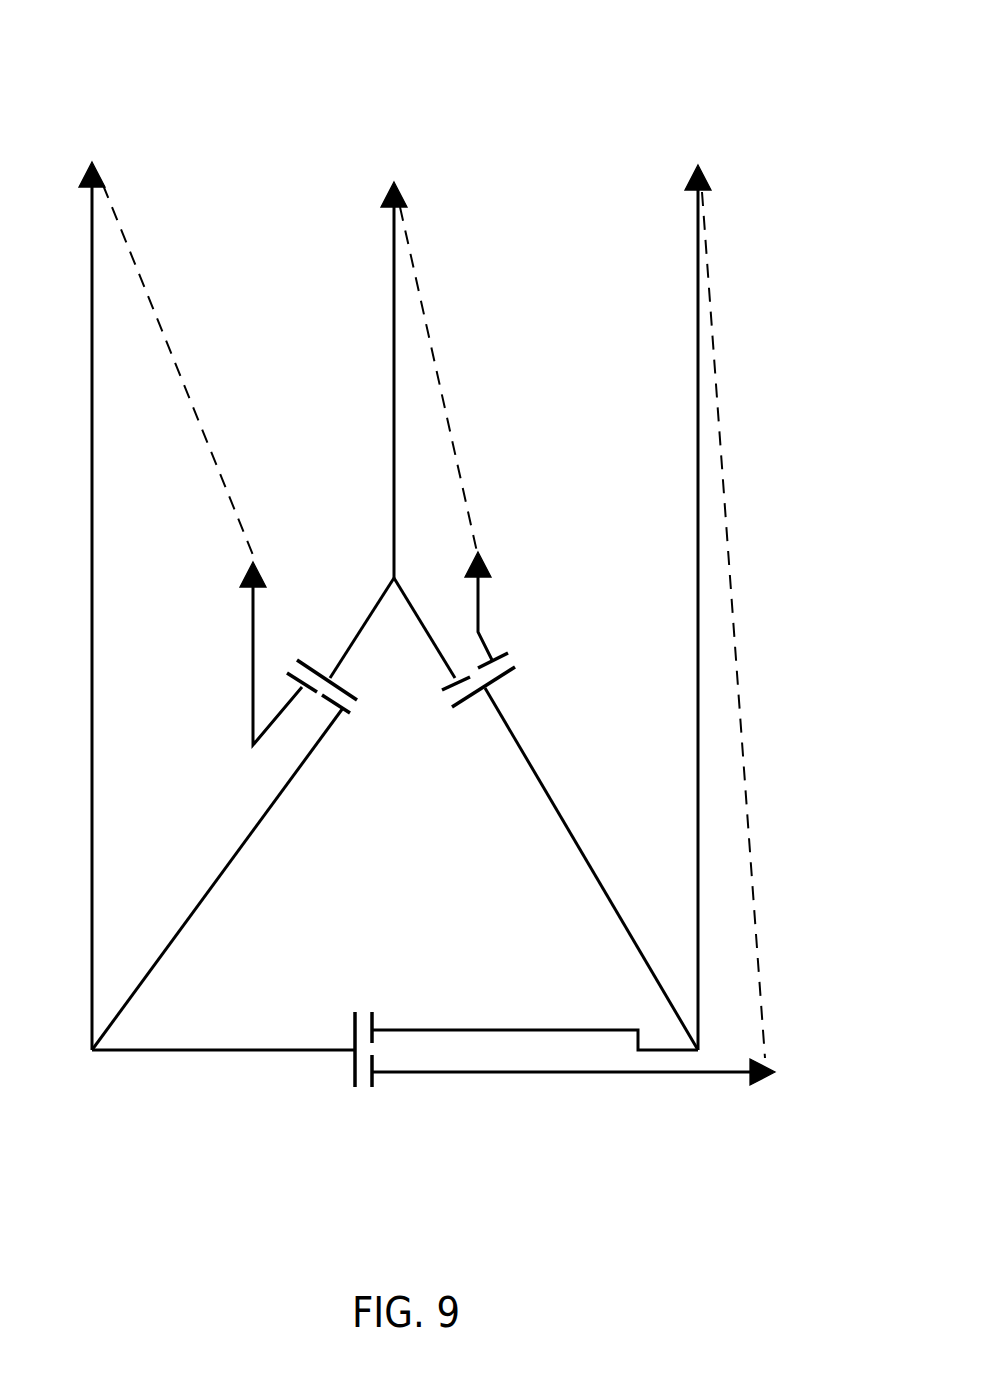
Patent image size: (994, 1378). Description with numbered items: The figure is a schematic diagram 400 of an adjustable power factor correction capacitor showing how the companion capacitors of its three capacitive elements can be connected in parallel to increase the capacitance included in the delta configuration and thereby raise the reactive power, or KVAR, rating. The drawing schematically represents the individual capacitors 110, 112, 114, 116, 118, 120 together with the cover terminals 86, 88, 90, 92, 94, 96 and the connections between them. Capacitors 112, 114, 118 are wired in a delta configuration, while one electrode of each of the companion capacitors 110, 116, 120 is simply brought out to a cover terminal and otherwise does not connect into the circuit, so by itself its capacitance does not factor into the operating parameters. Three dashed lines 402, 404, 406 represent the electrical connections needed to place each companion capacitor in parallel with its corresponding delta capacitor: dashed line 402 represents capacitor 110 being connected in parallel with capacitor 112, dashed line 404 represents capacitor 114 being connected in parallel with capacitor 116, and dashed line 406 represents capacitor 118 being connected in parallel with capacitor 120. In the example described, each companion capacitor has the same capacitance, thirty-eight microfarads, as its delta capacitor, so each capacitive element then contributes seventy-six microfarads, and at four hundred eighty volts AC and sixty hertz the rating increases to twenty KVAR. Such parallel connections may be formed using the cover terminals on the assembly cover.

The schematic diagram 400 is at (740, 60).
The cover terminal 86 is at (95, 590).
The cover terminal 88 is at (395, 359).
The cover terminal 90 is at (701, 591).
The cover terminal 92 is at (594, 1070).
The cover terminal 94 is at (271, 635).
The cover terminal 96 is at (495, 591).
The companion capacitor 110 is at (286, 651).
The capacitor 112 is at (358, 718).
The capacitor 114 is at (440, 716).
The companion capacitor 116 is at (532, 640).
The capacitor 118 is at (386, 992).
The companion capacitor 120 is at (379, 1110).
The dashed line 402 is at (167, 352).
The dashed line 404 is at (442, 388).
The dashed line 406 is at (718, 395).